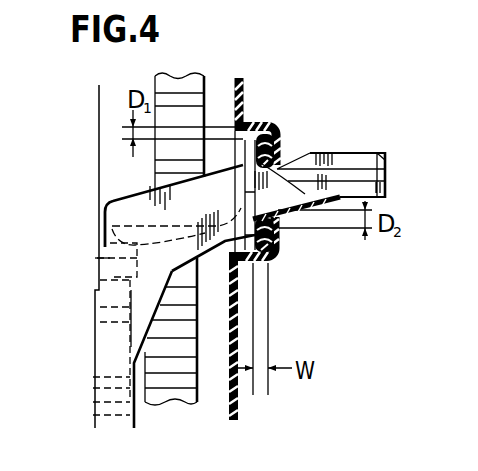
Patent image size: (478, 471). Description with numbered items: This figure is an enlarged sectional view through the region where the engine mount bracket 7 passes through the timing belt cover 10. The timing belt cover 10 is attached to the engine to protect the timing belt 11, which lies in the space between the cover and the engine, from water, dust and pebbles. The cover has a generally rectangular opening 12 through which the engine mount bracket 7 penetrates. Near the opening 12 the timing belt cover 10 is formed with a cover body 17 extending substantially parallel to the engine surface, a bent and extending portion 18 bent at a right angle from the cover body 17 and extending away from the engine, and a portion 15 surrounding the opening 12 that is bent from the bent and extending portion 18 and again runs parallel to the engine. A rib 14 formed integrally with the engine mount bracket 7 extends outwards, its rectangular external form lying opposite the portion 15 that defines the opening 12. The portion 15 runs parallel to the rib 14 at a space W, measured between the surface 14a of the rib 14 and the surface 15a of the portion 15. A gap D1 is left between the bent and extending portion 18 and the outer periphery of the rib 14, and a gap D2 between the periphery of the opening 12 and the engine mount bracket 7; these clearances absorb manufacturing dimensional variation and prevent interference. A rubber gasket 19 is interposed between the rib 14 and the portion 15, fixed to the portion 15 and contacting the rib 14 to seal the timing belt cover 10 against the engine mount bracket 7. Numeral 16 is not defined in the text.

The engine mount bracket 7 is at (380, 157).
The timing belt cover 10 is at (246, 84).
The timing belt 11 is at (174, 380).
The opening 12 is at (277, 170).
The rib 14 is at (277, 121).
The surface of the rib 14a is at (308, 196).
The portion of the timing belt cover surrounding the opening 15 is at (274, 160).
The surface of said portion 15a is at (385, 181).
The wall with flange 16 is at (100, 131).
The cover body 17 is at (234, 102).
The bent and extending portion 18 is at (250, 140).
The gasket 19 is at (243, 180).